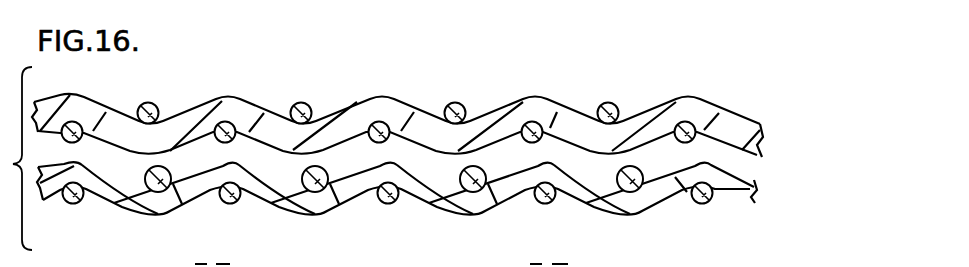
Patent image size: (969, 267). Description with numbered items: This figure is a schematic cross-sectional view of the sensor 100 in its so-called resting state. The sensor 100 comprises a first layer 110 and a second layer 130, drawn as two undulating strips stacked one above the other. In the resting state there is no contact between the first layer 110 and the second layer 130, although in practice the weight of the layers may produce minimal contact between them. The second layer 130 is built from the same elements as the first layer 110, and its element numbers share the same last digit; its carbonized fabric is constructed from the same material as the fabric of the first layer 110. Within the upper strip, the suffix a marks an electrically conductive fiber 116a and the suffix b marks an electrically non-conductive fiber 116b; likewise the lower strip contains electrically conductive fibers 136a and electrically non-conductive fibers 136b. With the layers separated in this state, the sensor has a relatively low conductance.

The sensor 100 is at (770, 109).
The first layer 110 is at (416, 103).
The electrically conductive fiber 116a is at (551, 101).
The electrically non-conductive fiber 116b is at (152, 103).
The second layer 130 is at (418, 213).
The electrically conductive fiber 136a is at (159, 196).
The electrically non-conductive fiber 136b is at (76, 203).